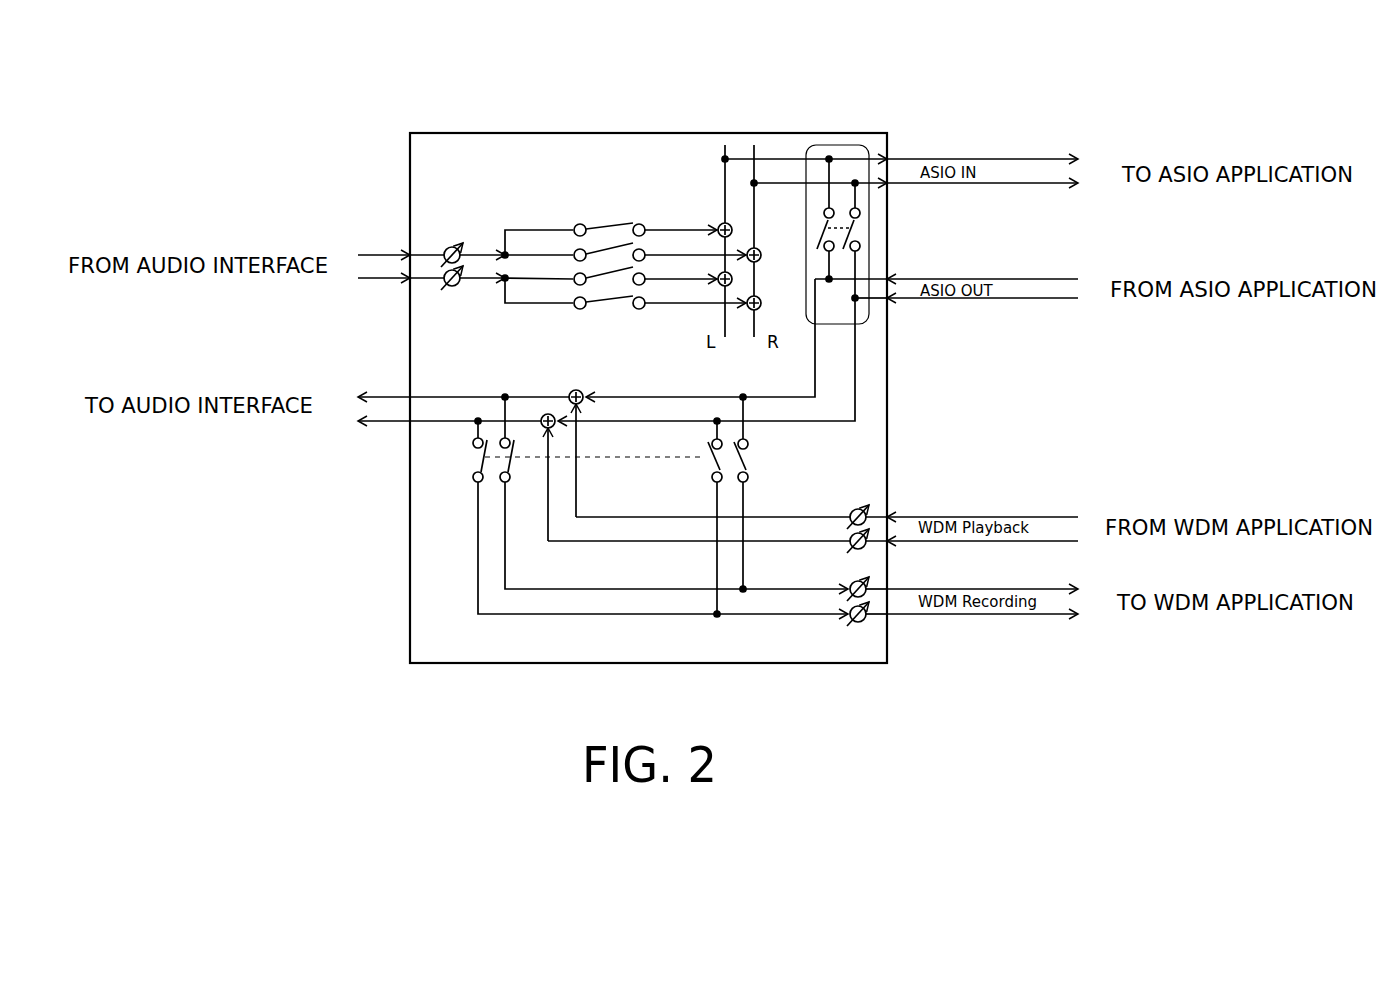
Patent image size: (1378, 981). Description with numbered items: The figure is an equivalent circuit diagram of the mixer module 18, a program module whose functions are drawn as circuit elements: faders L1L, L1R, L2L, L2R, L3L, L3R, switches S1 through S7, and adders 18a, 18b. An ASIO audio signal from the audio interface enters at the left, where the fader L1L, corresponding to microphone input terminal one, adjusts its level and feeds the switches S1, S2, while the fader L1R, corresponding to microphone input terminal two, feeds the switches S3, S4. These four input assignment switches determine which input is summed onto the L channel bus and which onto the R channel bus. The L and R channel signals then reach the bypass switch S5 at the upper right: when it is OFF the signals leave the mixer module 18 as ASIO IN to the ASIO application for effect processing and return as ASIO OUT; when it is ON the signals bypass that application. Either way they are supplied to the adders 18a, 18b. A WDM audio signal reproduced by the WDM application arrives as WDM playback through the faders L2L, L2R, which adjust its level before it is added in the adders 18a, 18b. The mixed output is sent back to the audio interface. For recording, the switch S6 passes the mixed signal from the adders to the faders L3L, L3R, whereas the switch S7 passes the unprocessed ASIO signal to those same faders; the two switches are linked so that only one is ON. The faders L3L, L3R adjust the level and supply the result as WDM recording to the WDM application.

The mixer module 18 is at (646, 133).
The adder 18a is at (580, 390).
The adder 18b is at (540, 414).
The switch S1 is at (588, 223).
The switch S2 is at (588, 248).
The switch S3 is at (588, 272).
The switch S4 is at (588, 296).
The bypass switch S5 is at (823, 234).
The switch S6 is at (477, 443).
The switch S7 is at (744, 439).
The fader L1L is at (453, 243).
The fader L1R is at (454, 291).
The fader L2L is at (836, 512).
The fader L2R is at (836, 546).
The fader L3L is at (836, 585).
The fader L3R is at (836, 620).